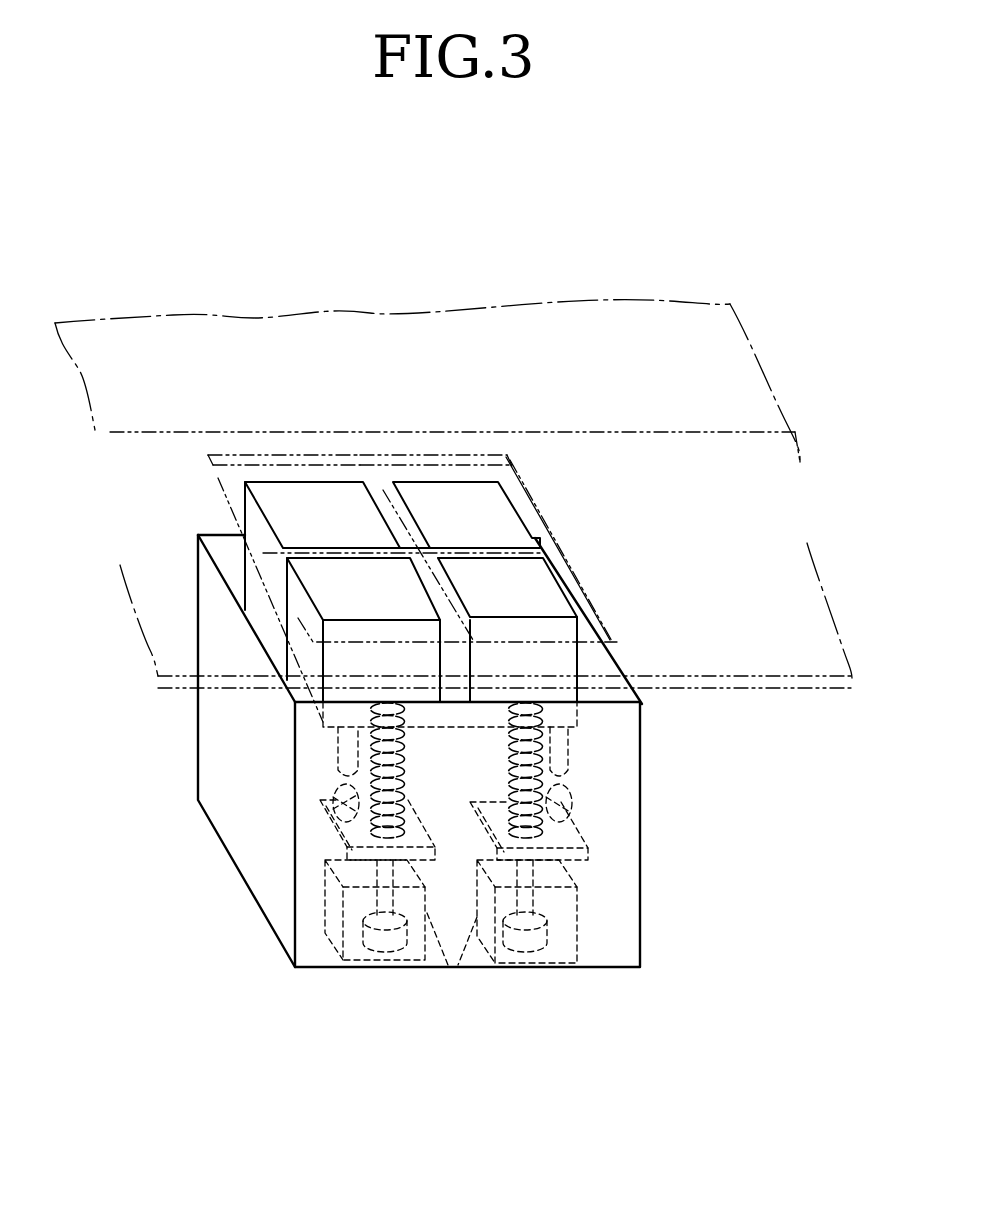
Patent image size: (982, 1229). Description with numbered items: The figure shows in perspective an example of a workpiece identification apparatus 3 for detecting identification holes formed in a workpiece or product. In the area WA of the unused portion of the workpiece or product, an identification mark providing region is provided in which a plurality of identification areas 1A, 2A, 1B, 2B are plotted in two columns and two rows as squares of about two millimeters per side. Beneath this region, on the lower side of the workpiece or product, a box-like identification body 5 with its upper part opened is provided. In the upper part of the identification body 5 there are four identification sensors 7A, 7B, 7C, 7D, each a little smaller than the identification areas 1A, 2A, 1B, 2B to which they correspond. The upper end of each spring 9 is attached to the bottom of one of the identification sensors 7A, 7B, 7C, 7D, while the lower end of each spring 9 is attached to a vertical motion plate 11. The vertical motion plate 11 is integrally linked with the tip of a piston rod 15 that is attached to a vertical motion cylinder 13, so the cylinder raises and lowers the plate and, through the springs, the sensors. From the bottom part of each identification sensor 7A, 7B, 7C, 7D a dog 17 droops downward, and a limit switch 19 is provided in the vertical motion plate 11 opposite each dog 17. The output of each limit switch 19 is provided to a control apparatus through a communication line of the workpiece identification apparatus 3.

The area of unused portion WA is at (770, 483).
The identification area 1A is at (290, 476).
The identification area 2A is at (443, 472).
The identification area 1B is at (310, 617).
The identification area 2B is at (592, 600).
The workpiece identification apparatus 3 is at (742, 766).
The identification body 5 is at (643, 958).
The identification sensor 7A is at (270, 500).
The identification sensor 7B is at (515, 516).
The identification sensor 7C is at (315, 582).
The identification sensor 7D is at (540, 582).
The spring 9 is at (505, 745).
The vertical motion plate 11 is at (345, 848).
The vertical motion cylinder 13 is at (327, 920).
The piston rod 15 is at (458, 968).
The dog 17 is at (340, 745).
The limit switch 19 is at (333, 805).